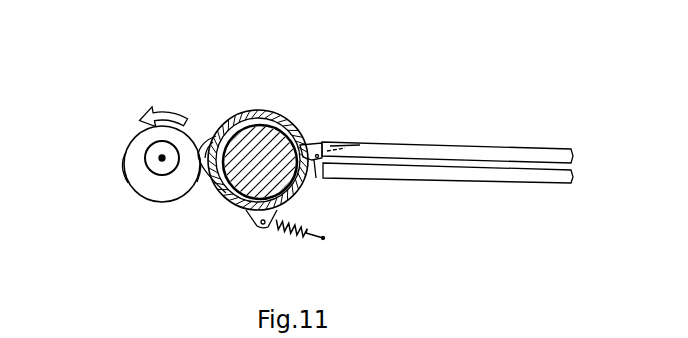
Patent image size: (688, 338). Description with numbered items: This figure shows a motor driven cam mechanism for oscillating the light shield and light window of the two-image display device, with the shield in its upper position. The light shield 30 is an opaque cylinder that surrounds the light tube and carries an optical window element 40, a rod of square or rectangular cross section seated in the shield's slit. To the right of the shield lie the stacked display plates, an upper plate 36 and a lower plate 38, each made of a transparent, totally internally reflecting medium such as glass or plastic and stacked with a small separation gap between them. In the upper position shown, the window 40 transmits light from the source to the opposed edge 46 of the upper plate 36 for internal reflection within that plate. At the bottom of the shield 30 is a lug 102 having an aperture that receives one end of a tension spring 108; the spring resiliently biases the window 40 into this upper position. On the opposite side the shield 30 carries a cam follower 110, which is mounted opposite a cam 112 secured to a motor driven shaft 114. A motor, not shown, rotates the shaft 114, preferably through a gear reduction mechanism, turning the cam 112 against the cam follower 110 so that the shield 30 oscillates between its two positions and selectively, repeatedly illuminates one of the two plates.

The light shield 30 is at (252, 112).
The upper plate 36 is at (493, 153).
The lower plate 38 is at (495, 178).
The optical window element 40 is at (310, 146).
The edge of the upper plate 46 is at (352, 142).
The lug 102 is at (253, 223).
The tension spring 108 is at (285, 237).
The cam follower 110 is at (203, 145).
The cam 112 is at (130, 141).
The motor driven shaft 114 is at (160, 160).